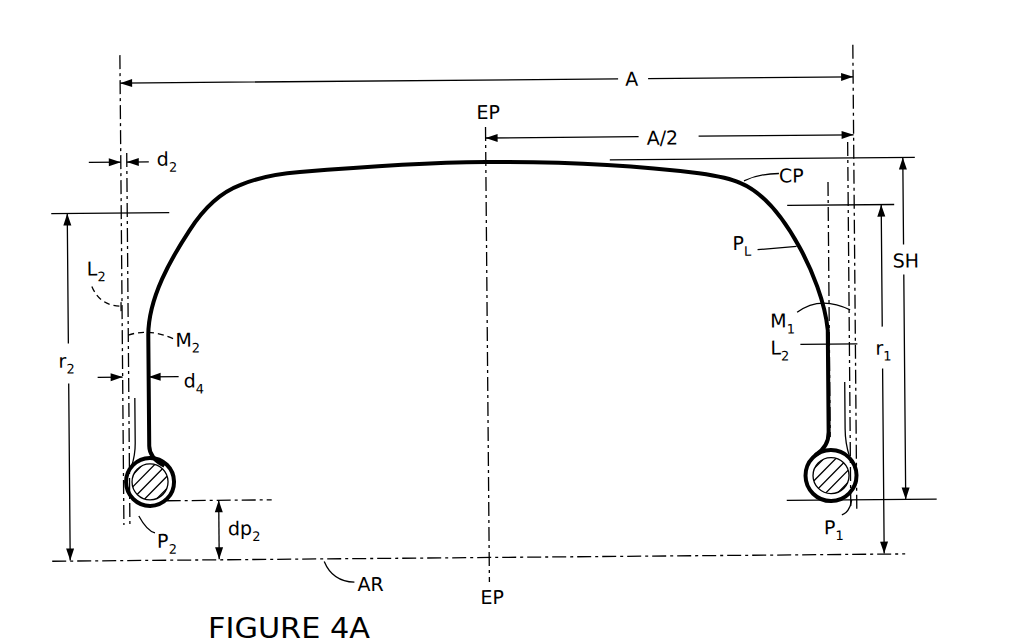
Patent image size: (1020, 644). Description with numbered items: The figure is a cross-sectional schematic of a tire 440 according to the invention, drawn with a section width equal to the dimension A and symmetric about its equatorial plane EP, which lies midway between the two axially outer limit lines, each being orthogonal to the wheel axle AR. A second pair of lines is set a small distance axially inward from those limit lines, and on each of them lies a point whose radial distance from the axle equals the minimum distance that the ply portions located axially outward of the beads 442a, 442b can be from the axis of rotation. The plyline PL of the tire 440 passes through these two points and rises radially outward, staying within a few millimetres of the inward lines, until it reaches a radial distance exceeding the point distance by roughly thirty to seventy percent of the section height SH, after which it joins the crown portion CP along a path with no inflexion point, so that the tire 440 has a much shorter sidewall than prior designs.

The tire 440 is at (826, 119).
The bead 442a is at (820, 468).
The bead 442b is at (157, 463).